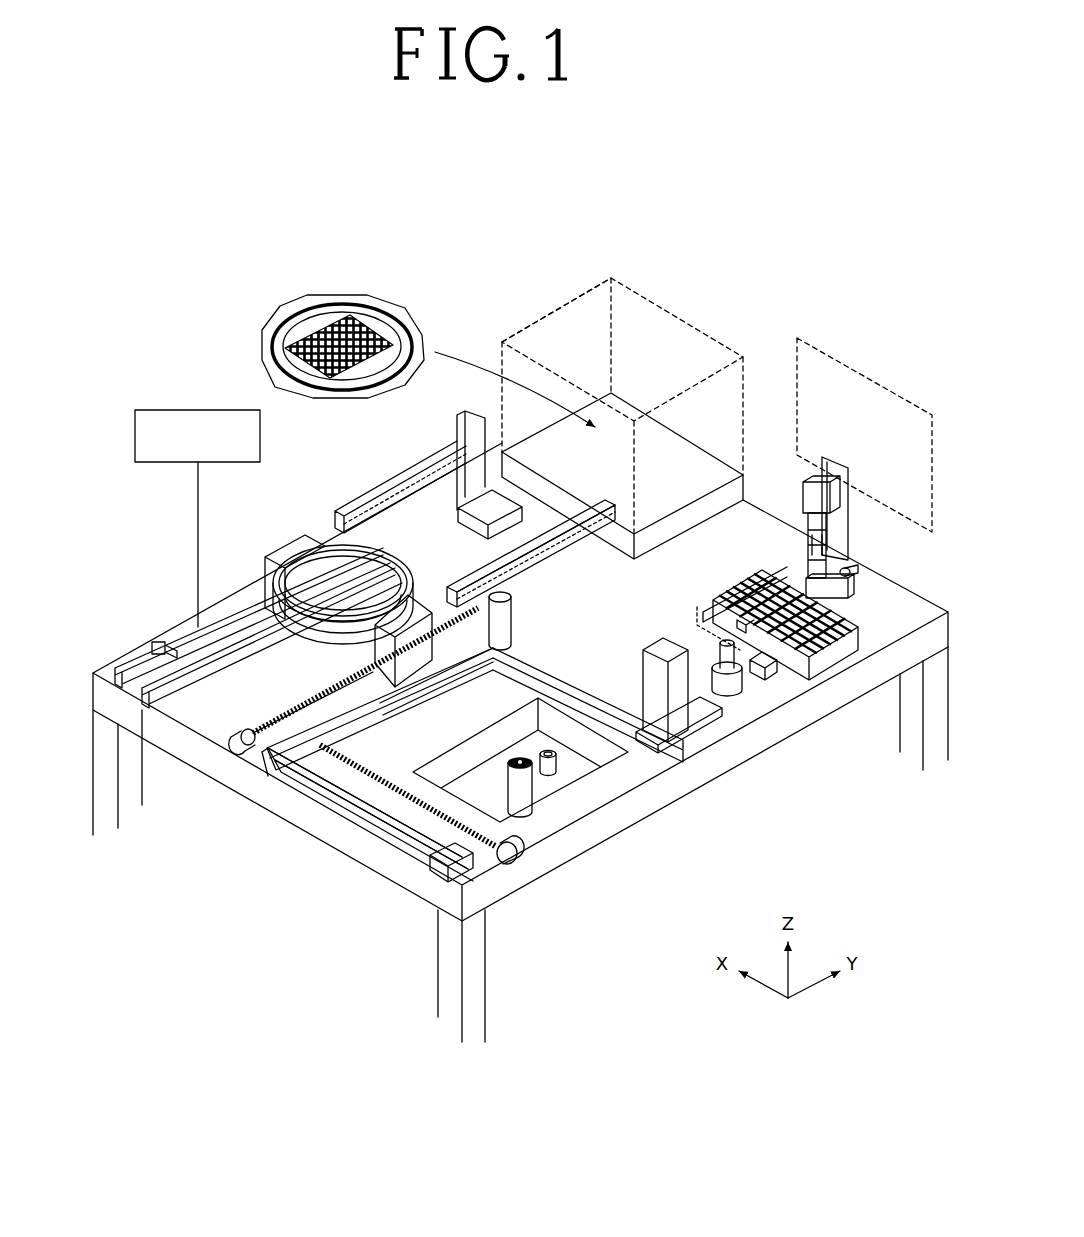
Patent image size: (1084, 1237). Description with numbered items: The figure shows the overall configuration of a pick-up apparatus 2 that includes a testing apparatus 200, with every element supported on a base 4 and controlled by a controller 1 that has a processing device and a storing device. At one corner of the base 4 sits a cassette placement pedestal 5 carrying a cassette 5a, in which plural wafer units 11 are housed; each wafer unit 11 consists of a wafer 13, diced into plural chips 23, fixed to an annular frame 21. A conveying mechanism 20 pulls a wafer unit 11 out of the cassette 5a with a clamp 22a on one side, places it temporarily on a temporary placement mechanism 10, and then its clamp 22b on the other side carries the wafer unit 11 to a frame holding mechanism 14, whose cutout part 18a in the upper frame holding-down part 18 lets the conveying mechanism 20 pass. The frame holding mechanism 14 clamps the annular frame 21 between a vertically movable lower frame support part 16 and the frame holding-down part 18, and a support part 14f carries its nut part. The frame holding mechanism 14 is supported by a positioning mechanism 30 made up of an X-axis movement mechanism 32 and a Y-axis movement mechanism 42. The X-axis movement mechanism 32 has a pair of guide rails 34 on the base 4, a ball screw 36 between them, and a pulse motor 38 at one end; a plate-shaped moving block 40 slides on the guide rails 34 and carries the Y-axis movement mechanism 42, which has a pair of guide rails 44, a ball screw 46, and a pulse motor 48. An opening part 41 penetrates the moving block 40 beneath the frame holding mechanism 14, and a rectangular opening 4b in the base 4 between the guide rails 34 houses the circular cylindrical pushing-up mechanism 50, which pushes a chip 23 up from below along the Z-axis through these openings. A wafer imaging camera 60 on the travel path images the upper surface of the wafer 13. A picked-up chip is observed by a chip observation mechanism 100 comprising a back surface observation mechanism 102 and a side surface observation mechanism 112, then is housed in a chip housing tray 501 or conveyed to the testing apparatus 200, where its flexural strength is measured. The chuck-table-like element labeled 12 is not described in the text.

The controller 1 is at (207, 410).
The pick-up apparatus 2 is at (756, 469).
The base 4 is at (718, 758).
The rectangular opening 4b is at (572, 772).
The cassette placement pedestal 5 is at (636, 416).
The cassette 5a is at (515, 335).
The temporary placement mechanism 10 is at (619, 575).
The wafer unit 11 is at (320, 320).
The chuck table 12 is at (527, 589).
The wafer 13 is at (339, 314).
The frame holding mechanism 14 is at (192, 865).
The support part 14f is at (412, 657).
The frame support part 16 is at (300, 620).
The frame holding-down part 18 is at (297, 670).
The cutout part 18a is at (333, 644).
The conveying mechanism 20 is at (510, 498).
The annular frame 21 is at (272, 330).
The clamp 22a is at (520, 508).
The clamp 22b is at (523, 567).
The chips 23 is at (353, 320).
The positioning mechanism 30 is at (173, 1003).
The X-axis movement mechanism 32 is at (307, 958).
The guide rails 34 is at (357, 817).
The ball screw 36 is at (407, 792).
The pulse motor 38 is at (462, 853).
The moving block 40 is at (165, 717).
The opening part 41 is at (245, 698).
The Y-axis movement mechanism 42 is at (298, 958).
The guide rails 44 is at (150, 705).
The ball screw 46 is at (343, 633).
The pulse motor 48 is at (303, 625).
The pushing-up mechanism 50 is at (534, 786).
The wafer imaging camera 60 is at (511, 620).
The chip observation mechanism 100 is at (788, 683).
The back surface observation mechanism 102 is at (727, 721).
The side surface observation mechanism 112 is at (762, 694).
The testing apparatus 200 is at (859, 588).
The chip housing tray 501 is at (777, 550).